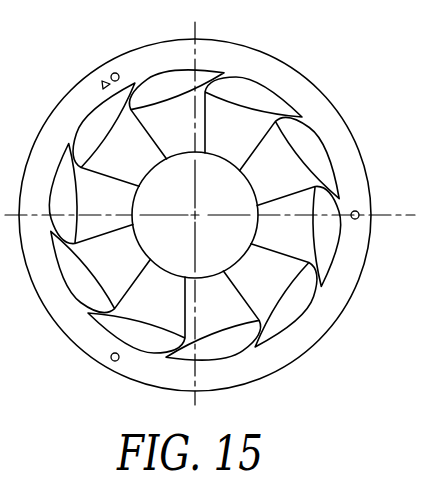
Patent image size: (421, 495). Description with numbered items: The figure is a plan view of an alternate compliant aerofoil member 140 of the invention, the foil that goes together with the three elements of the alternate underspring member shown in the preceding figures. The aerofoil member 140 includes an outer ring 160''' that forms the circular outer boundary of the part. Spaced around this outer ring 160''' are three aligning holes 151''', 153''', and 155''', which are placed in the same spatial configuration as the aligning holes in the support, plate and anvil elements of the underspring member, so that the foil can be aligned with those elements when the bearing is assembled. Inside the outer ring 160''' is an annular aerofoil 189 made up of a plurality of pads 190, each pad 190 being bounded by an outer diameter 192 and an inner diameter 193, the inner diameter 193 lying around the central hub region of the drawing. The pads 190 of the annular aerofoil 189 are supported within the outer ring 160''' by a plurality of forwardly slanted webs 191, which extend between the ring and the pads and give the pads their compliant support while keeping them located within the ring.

The aerofoil member 140 is at (210, 216).
The aligning hole 151''' is at (379, 268).
The aligning hole 153''' is at (96, 48).
The aligning hole 155''' is at (103, 388).
The outer ring 160''' is at (212, 215).
The annular aerofoil 189 is at (92, 286).
The pad 190 is at (209, 214).
The forwardly slanted web 191 is at (328, 173).
The outer diameter 192 is at (143, 165).
The inner diameter 193 is at (223, 158).